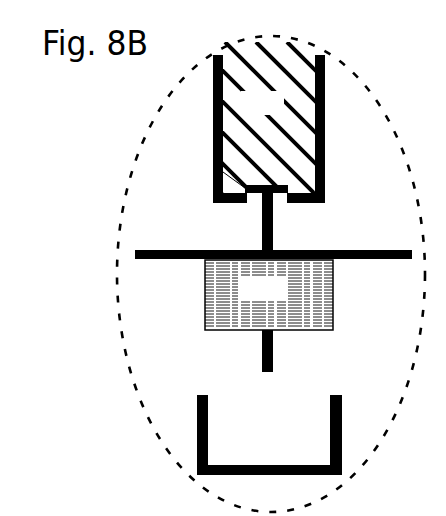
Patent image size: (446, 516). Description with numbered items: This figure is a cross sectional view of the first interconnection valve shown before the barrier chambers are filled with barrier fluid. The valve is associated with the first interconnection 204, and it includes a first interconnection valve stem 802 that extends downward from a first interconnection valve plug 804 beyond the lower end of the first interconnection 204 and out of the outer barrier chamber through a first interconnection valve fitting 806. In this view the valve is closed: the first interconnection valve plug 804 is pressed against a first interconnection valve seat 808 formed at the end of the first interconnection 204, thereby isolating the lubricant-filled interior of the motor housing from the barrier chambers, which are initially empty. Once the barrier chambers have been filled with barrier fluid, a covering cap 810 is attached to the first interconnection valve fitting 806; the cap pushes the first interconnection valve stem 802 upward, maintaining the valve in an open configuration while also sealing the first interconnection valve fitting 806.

The first interconnection 204 is at (281, 113).
The first interconnection valve stem 802 is at (273, 340).
The first interconnection valve plug 804 is at (214, 173).
The first interconnection valve fitting 806 is at (283, 298).
The first interconnection valve seat 808 is at (326, 189).
The covering cap 810 is at (342, 450).